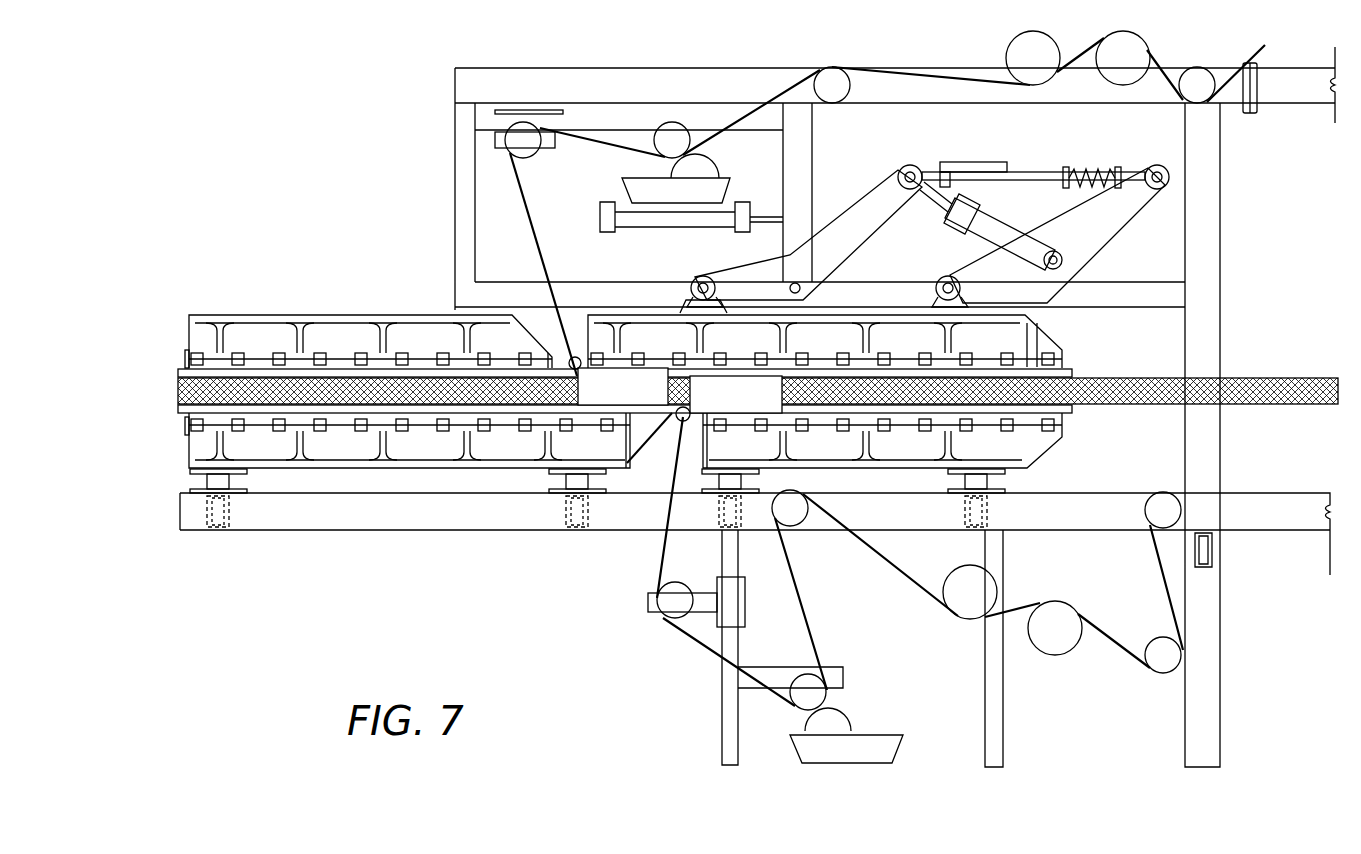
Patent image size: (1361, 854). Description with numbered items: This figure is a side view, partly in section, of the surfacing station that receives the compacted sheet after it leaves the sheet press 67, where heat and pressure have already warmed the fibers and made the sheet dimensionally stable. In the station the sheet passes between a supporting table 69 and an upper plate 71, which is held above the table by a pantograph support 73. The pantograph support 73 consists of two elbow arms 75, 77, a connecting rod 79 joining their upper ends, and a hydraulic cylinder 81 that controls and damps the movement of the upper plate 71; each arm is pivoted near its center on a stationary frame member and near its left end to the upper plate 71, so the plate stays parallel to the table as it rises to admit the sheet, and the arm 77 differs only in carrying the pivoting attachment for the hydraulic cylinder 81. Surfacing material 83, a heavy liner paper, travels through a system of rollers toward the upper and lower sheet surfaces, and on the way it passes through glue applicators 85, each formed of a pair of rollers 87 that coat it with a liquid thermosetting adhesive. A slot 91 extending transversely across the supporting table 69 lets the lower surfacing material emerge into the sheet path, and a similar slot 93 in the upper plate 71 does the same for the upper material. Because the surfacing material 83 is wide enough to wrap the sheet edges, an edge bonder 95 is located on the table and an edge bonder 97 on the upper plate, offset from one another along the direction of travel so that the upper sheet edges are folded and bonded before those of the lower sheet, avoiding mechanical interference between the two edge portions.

The sheet press 67 is at (358, 310).
The supporting table 69 is at (1074, 404).
The upper plate 71 is at (1074, 370).
The pantograph support 73 is at (977, 220).
The elbow arm 75 is at (748, 272).
The elbow arm 77 is at (1110, 250).
The connecting rod 79 is at (1029, 172).
The hydraulic cylinder 81 is at (980, 232).
The surfacing material 83 is at (522, 219).
The glue applicator 85 is at (729, 149).
The roller 87 is at (719, 157).
The slot 91 is at (673, 413).
The slot 93 is at (563, 367).
The edge bonder 95 is at (689, 422).
The edge bonder 97 is at (583, 359).